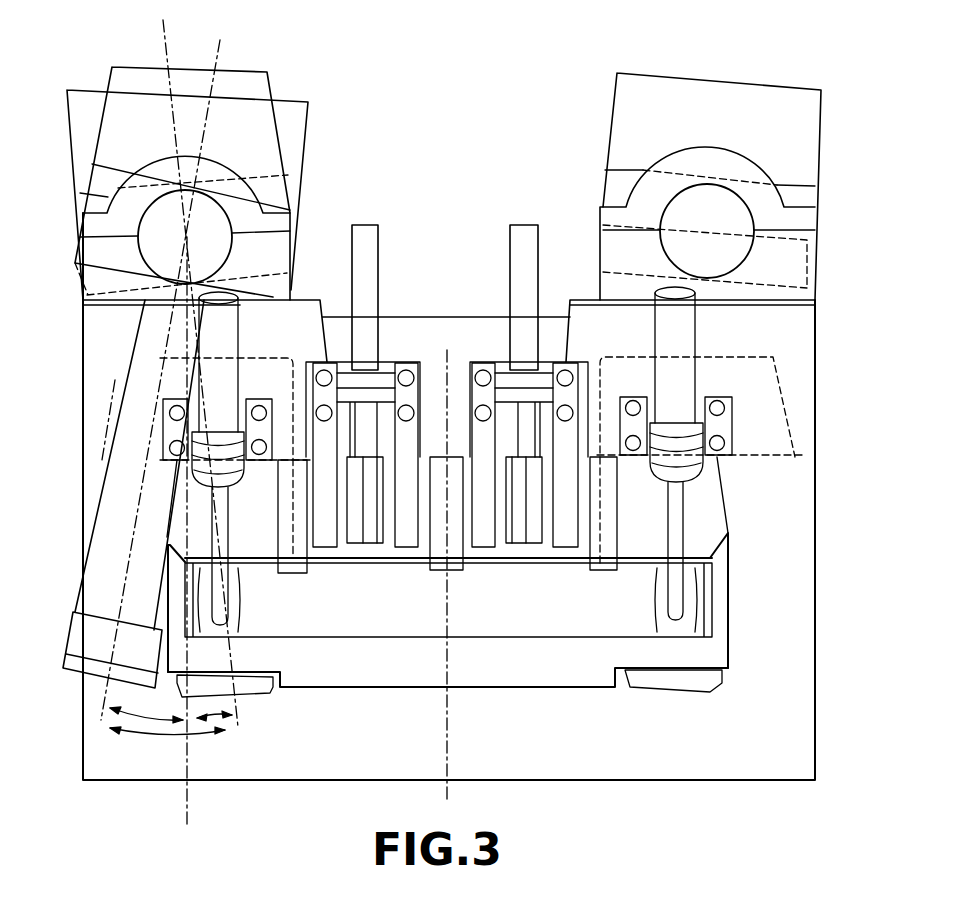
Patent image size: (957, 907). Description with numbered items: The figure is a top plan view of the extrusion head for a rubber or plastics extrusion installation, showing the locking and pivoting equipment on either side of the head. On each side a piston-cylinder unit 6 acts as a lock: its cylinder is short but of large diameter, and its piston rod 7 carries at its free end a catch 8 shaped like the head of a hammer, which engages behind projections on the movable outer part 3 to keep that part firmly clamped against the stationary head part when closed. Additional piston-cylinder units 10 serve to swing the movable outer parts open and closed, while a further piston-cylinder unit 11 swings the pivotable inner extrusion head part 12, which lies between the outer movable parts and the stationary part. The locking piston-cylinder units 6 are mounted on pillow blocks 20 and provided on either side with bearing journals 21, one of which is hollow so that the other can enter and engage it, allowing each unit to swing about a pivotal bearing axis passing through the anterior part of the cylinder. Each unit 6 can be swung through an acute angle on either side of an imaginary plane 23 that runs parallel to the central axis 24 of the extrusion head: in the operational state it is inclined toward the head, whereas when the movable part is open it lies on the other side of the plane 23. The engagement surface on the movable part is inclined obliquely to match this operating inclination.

The pivotable hinged outer part 3 is at (363, 533).
The piston-cylinder unit 6 is at (112, 127).
The piston rod 7 is at (135, 415).
The catch 8 is at (72, 640).
The additional piston-cylinder unit 10 is at (370, 242).
The additional piston-cylinder unit 11 is at (222, 347).
The pivotable inner extrusion head part 12 is at (550, 622).
The pillow block 20 is at (767, 288).
The bearing journal 21 is at (185, 238).
The imaginary plane 23 is at (190, 767).
The central axis 24 is at (450, 742).